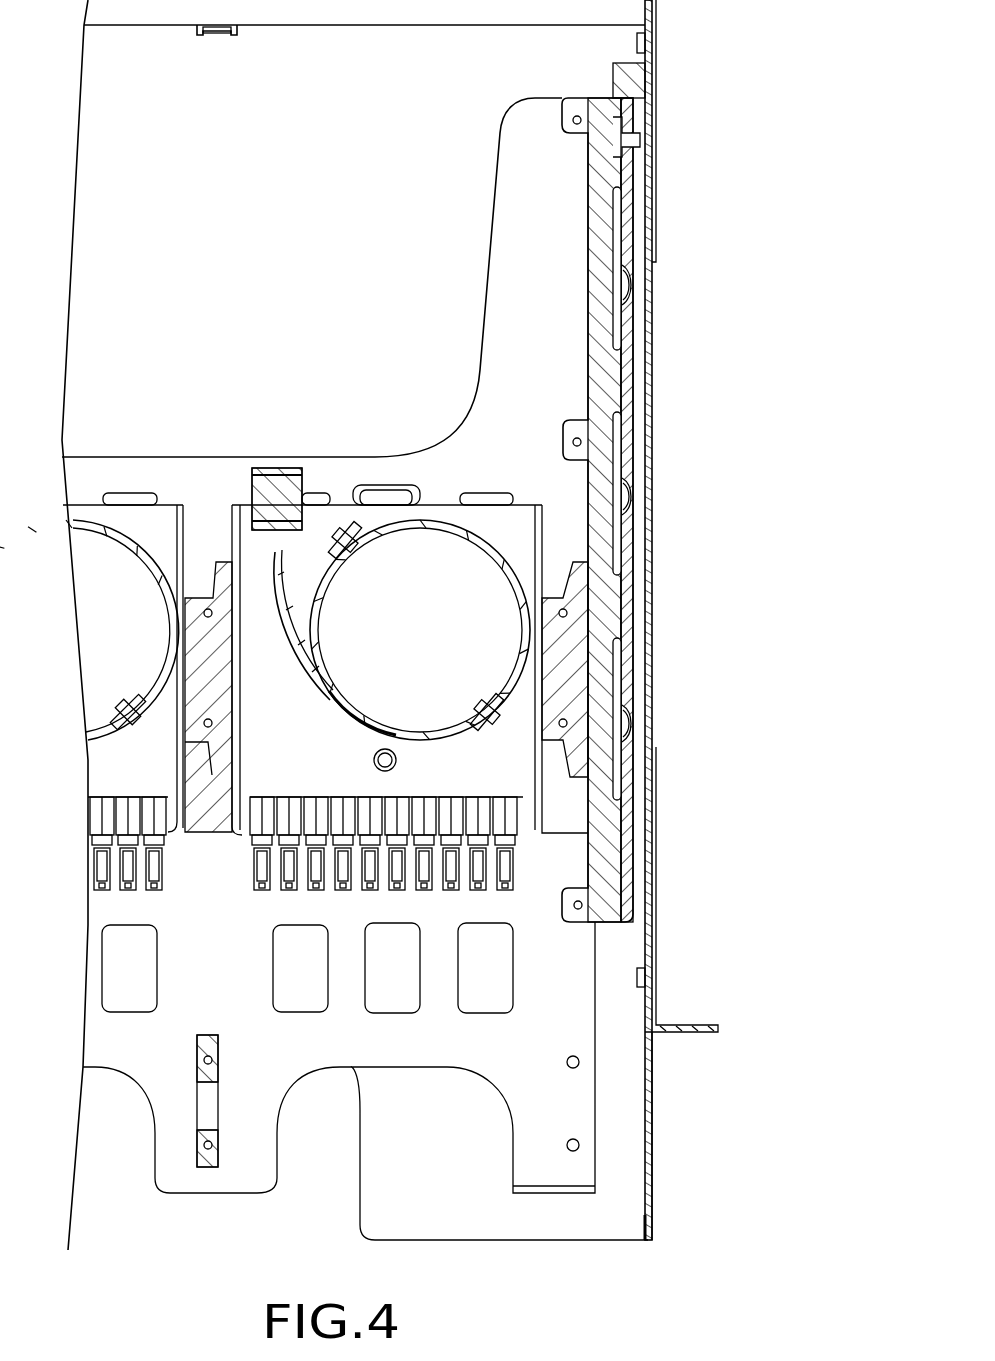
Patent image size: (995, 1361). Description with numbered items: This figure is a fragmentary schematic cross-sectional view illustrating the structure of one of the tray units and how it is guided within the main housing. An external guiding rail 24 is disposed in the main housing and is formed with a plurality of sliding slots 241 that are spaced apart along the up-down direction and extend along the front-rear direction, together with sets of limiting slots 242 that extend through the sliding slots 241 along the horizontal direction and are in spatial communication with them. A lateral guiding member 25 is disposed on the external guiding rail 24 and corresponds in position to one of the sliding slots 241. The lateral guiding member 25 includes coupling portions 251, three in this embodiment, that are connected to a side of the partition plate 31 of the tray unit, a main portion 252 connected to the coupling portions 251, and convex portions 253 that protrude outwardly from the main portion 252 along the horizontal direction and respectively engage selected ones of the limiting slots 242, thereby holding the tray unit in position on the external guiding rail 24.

The external guiding rail 24 is at (690, 620).
The sliding slot 241 is at (635, 850).
The limiting slot 242 is at (638, 235).
The lateral guiding member 25 is at (597, 530).
The coupling portion 251 is at (572, 108).
The main portion 252 is at (595, 302).
The convex portion 253 is at (635, 283).
The partition plate 31 is at (507, 135).